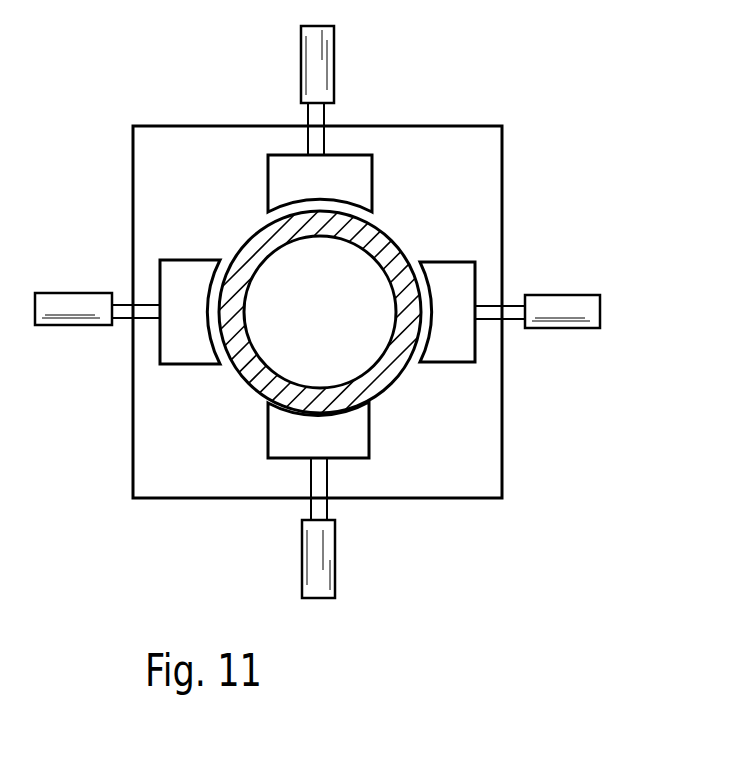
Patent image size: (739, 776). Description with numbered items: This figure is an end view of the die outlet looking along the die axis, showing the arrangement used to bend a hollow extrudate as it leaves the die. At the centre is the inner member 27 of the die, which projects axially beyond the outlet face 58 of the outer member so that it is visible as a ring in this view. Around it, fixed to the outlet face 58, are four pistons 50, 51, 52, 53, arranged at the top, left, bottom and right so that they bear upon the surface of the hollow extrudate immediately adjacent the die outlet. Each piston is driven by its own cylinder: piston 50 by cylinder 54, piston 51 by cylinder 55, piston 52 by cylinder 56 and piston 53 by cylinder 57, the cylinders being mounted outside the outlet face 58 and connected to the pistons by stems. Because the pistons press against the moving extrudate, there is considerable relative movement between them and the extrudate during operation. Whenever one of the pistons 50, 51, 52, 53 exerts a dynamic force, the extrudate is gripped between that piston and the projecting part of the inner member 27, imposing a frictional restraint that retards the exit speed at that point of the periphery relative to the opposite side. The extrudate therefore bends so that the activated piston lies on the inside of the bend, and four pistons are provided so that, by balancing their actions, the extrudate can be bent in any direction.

The inner member 27 is at (334, 303).
The piston 50 is at (372, 178).
The piston 51 is at (187, 365).
The piston 52 is at (369, 435).
The piston 53 is at (453, 262).
The cylinder 54 is at (318, 70).
The cylinder 55 is at (73, 315).
The cylinder 56 is at (328, 567).
The cylinder 57 is at (565, 308).
The outlet face 58 is at (197, 193).